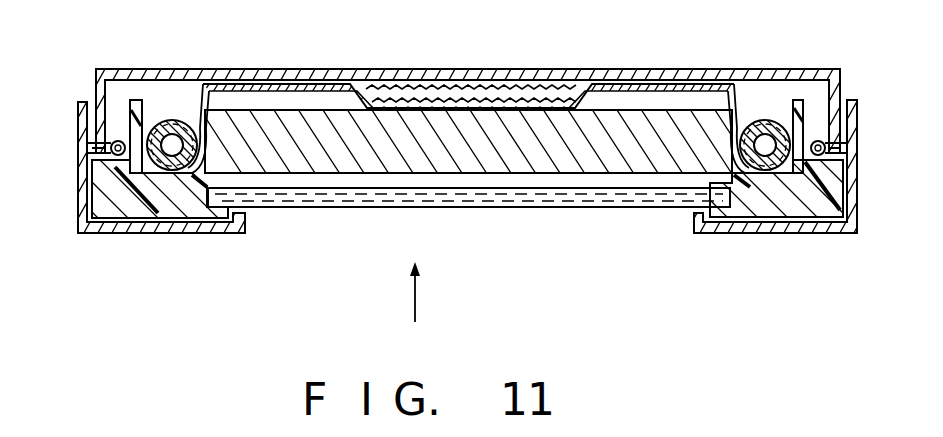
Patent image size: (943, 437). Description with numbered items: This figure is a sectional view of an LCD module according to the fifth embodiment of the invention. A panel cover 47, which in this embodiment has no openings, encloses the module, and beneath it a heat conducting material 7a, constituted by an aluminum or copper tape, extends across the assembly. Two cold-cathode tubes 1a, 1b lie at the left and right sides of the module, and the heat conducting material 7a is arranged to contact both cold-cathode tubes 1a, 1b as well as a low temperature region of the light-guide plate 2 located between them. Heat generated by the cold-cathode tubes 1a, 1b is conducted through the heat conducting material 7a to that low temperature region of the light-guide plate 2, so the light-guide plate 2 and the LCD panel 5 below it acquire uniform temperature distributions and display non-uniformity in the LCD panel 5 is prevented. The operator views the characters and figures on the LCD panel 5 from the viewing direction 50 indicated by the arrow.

The panel cover 47 is at (202, 69).
The heat conducting material 7a is at (343, 88).
The light-guide plate 2 is at (335, 158).
The LCD panel 5 is at (530, 200).
The cold-cathode tube 1b is at (170, 168).
The cold-cathode tube 1a is at (758, 168).
The viewing direction 50 is at (418, 294).